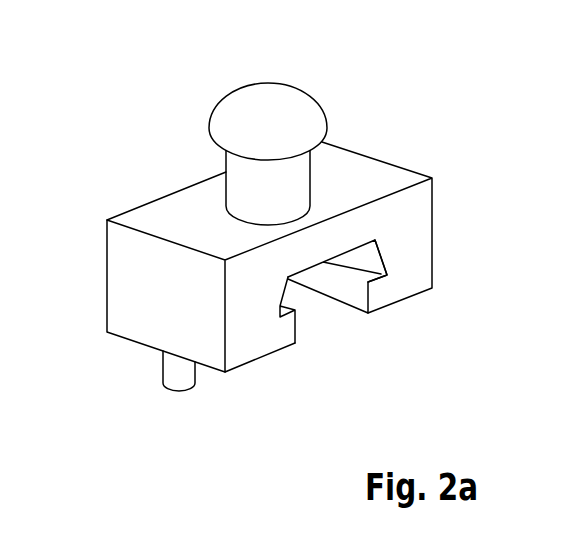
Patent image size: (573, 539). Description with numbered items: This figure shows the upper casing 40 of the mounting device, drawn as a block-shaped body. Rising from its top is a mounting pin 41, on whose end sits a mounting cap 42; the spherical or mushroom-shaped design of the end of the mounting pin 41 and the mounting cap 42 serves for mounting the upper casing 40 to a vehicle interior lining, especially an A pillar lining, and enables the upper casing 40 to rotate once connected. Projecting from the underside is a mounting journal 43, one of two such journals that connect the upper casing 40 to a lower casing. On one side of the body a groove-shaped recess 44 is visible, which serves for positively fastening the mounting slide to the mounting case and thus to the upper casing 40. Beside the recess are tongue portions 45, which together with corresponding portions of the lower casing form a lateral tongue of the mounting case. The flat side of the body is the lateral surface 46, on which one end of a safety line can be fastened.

The upper casing 40 is at (257, 214).
The mounting pin 41 is at (238, 165).
The mounting cap 42 is at (257, 98).
The mounting journal 43 is at (180, 382).
The groove-shaped recess 44 is at (325, 308).
The tongue portions 45 is at (287, 338).
The lateral surface 46 is at (118, 280).